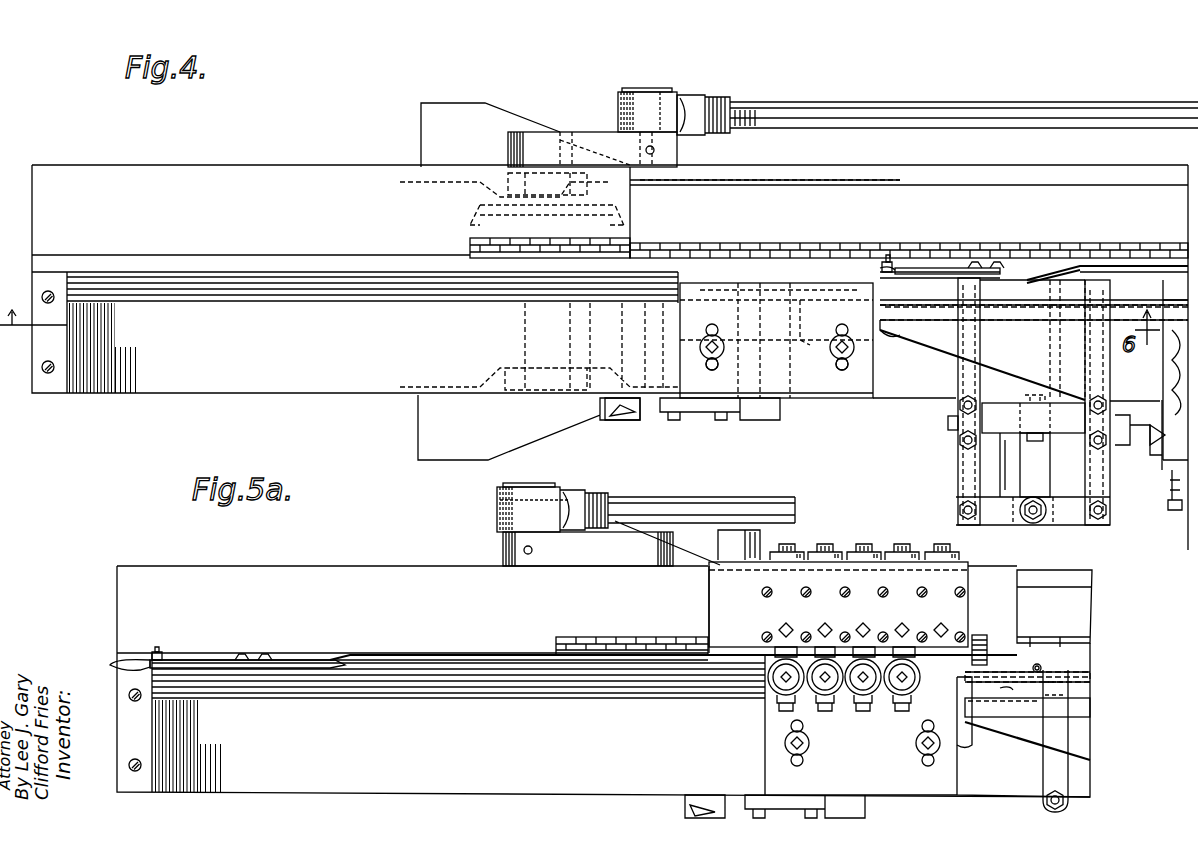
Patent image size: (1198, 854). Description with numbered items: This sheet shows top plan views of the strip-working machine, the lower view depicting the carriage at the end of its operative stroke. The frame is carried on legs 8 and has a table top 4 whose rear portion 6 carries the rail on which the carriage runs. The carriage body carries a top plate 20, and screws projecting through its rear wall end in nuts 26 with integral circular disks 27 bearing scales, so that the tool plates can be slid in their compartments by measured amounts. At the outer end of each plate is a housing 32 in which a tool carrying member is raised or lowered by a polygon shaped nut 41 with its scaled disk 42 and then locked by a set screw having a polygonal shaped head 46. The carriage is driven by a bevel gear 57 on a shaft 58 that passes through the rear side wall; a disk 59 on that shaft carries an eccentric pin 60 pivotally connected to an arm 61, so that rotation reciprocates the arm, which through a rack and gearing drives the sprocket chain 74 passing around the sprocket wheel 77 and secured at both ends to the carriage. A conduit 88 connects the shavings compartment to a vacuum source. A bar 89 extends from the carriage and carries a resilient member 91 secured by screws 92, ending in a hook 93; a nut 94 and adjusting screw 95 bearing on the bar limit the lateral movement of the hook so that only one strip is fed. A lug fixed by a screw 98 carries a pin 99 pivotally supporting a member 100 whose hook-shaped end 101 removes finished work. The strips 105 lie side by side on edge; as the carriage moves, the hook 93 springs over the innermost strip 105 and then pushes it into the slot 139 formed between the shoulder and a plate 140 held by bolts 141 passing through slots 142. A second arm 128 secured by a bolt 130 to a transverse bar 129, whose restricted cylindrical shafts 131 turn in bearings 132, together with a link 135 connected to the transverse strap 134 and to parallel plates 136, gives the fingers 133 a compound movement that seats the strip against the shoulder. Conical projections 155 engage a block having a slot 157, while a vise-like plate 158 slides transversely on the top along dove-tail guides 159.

In FIG. 4, the table top 4 is at (190, 180).
In FIG. 5A, the table top 4 is at (374, 636).
In FIG. 4, the rear portion of the top 6 is at (33, 333).
In FIG. 4, the legs 8 is at (530, 428).
In FIG. 5A, the top plate 20 is at (950, 620).
In FIG. 5A, the nuts 26 is at (858, 546).
In FIG. 5A, the circular disks 27 is at (860, 575).
In FIG. 5A, the housing 32 is at (912, 690).
In FIG. 5A, the polygon shaped nut 41 is at (840, 700).
In FIG. 5A, the disk 42 is at (770, 695).
In FIG. 5A, the polygonal shaped head 46 is at (777, 700).
In FIG. 4, the bevel gear 57 is at (470, 218).
In FIG. 4, the shaft 58 is at (525, 340).
In FIG. 4, the disk 59 is at (590, 135).
In FIG. 5A, the disk 59 is at (605, 555).
In FIG. 4, the eccentric pin 60 is at (660, 145).
In FIG. 5A, the eccentric pin 60 is at (552, 507).
In FIG. 4, the arm 61 is at (793, 112).
In FIG. 5A, the arm 61 is at (695, 500).
In FIG. 4, the sprocket chain 74 is at (720, 246).
In FIG. 5A, the sprocket chain 74 is at (618, 640).
In FIG. 4, the sprocket wheel 77 is at (470, 247).
In FIG. 5A, the sprocket wheel 77 is at (556, 644).
In FIG. 5A, the conduit 88 is at (745, 540).
In FIG. 4, the bar 89 is at (1135, 267).
In FIG. 5A, the bar 89 is at (412, 660).
In FIG. 4, the member 91 is at (928, 268).
In FIG. 5A, the member 91 is at (235, 645).
In FIG. 4, the screws 92 is at (997, 267).
In FIG. 5A, the screws 92 is at (265, 658).
In FIG. 4, the hook 93 is at (858, 275).
In FIG. 5A, the hook 93 is at (125, 662).
In FIG. 4, the nut 94 is at (895, 270).
In FIG. 5A, the nut 94 is at (162, 658).
In FIG. 4, the adjusting screw 95 is at (885, 260).
In FIG. 5A, the adjusting screw 95 is at (158, 652).
In FIG. 5A, the screw 98 is at (992, 655).
In FIG. 5A, the pin 99 is at (1040, 664).
In FIG. 4, the member 100 is at (998, 318).
In FIG. 5A, the member 100 is at (1080, 708).
In FIG. 4, the hook-shaped end 101 is at (902, 325).
In FIG. 5A, the hook-shaped end 101 is at (950, 692).
In FIG. 4, the strips 105 is at (275, 278).
In FIG. 5A, the strips 105 is at (565, 682).
In FIG. 4, the second arm 128 is at (1050, 433).
In FIG. 4, the transverse bar 129 is at (1000, 422).
In FIG. 4, the bolt 130 is at (1035, 442).
In FIG. 4, the restricted cylindrical shafts 131 is at (948, 422).
In FIG. 4, the bearings 132 is at (958, 438).
In FIG. 4, the fingers 133 is at (955, 374).
In FIG. 5A, the fingers 133 is at (1063, 735).
In FIG. 4, the transverse strap 134 is at (1070, 515).
In FIG. 4, the link 135 is at (1027, 522).
In FIG. 4, the parallel plates 136 is at (1015, 478).
In FIG. 4, the slot 139 is at (776, 290).
In FIG. 4, the plate 140 is at (838, 393).
In FIG. 5A, the plate 140 is at (893, 780).
In FIG. 4, the bolts 141 is at (705, 360).
In FIG. 5A, the bolts 141 is at (806, 746).
In FIG. 4, the slots 142 is at (712, 333).
In FIG. 5A, the slots 142 is at (800, 762).
In FIG. 4, the conical projection 155 is at (1165, 460).
In FIG. 4, the slot 157 is at (1175, 360).
In FIG. 4, the vise-like plate 158 is at (1032, 352).
In FIG. 5A, the vise-like plate 158 is at (1030, 738).
In FIG. 4, the dove-tail guides 159 is at (1075, 275).